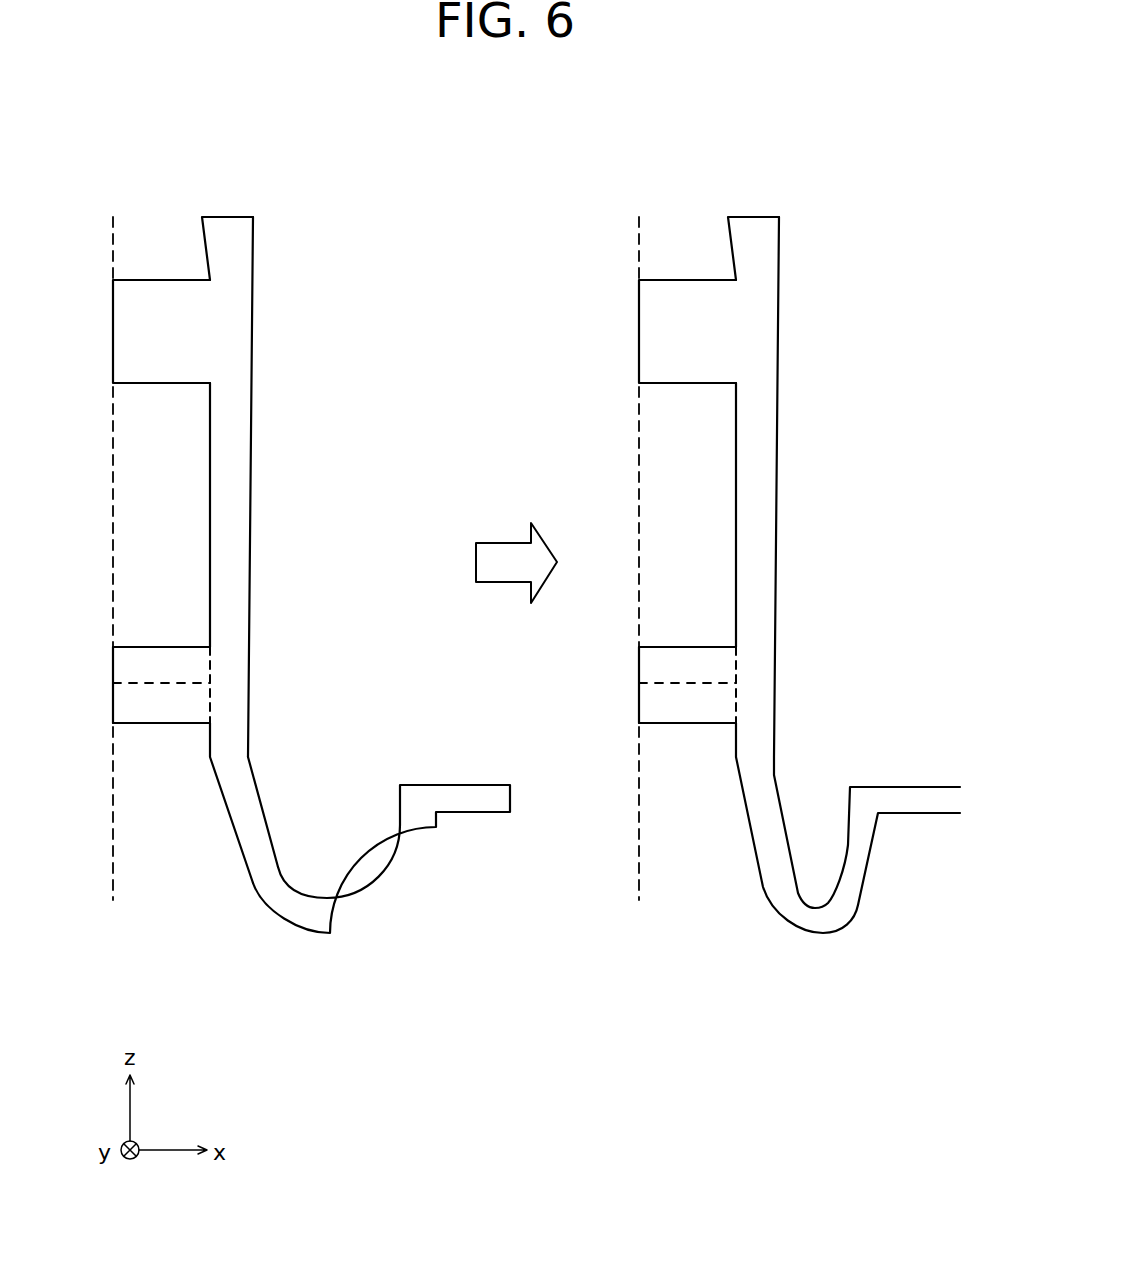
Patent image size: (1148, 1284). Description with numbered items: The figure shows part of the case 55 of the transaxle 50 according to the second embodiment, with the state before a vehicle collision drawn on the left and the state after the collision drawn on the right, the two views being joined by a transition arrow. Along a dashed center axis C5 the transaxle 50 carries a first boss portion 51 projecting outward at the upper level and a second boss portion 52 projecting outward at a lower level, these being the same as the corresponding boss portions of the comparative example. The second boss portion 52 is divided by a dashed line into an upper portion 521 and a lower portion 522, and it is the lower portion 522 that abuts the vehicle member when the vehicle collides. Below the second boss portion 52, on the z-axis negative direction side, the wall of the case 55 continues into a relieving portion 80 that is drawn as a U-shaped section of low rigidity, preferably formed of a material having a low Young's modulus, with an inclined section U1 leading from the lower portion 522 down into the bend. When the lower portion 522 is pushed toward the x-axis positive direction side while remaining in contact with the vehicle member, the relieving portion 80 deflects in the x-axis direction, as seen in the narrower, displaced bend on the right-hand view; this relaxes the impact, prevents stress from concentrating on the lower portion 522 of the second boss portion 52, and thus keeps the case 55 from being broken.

The transaxle 50 is at (278, 212).
The first boss portion 51 is at (132, 350).
The second boss portion 52 is at (114, 678).
The upper portion of the second boss portion 521 is at (160, 658).
The lower portion of the second boss portion 522 is at (183, 708).
The case 55 is at (233, 460).
The relieving portion 80 is at (315, 915).
The inclined section U1 is at (243, 828).
The center axis C5 is at (110, 230).